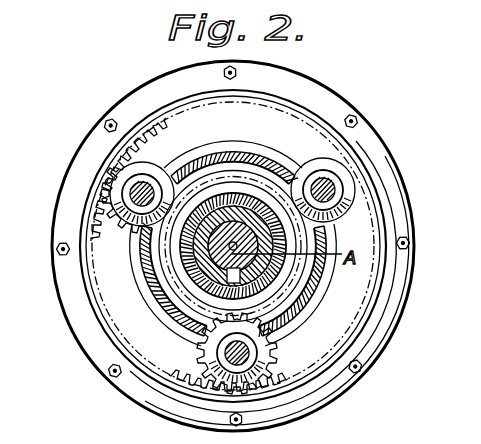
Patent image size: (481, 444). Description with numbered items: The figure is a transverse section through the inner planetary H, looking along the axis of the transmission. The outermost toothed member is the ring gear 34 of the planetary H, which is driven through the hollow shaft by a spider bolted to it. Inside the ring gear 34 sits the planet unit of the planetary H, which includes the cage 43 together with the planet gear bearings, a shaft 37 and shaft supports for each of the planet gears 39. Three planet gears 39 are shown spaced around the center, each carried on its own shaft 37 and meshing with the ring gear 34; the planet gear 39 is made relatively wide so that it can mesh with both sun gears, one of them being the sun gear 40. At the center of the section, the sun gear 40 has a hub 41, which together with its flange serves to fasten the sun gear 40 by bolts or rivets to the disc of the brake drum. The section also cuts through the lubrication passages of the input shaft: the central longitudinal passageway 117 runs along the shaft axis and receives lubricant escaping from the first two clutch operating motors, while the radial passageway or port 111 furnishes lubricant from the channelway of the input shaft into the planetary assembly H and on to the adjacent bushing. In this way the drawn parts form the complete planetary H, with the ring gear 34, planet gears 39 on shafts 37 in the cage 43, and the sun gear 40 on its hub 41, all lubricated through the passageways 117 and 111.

The inner planetary H is at (329, 82).
The ring gear 34 is at (106, 188).
The shaft 37 is at (130, 198).
The planet gear 39 is at (110, 214).
The sun gear 40 is at (290, 305).
The hub 41 is at (228, 280).
The cage 43 is at (219, 158).
The port 111 is at (200, 297).
The central longitudinal passageway 117 is at (251, 208).